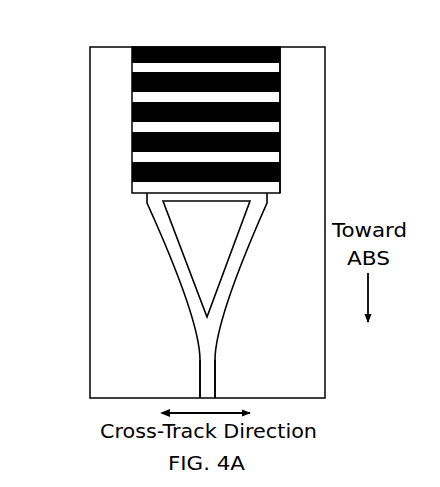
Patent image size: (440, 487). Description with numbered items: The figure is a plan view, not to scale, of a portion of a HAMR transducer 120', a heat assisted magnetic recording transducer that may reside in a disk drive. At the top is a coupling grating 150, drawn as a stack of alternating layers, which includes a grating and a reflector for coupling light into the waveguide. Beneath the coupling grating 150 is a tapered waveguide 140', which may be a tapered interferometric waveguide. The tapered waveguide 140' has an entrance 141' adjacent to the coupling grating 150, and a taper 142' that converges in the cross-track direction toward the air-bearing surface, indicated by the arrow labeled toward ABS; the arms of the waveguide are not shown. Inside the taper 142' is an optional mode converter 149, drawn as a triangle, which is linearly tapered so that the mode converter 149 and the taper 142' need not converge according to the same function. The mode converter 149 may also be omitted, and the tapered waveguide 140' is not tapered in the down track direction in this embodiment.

The HAMR transducer 120' is at (207, 201).
The coupling grating 150 is at (116, 133).
The entrance 141' is at (326, 120).
The taper 142' is at (150, 295).
The mode converter 149 is at (173, 227).
The tapered waveguide 140' is at (294, 364).